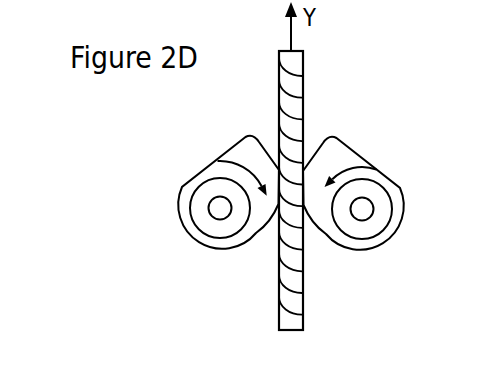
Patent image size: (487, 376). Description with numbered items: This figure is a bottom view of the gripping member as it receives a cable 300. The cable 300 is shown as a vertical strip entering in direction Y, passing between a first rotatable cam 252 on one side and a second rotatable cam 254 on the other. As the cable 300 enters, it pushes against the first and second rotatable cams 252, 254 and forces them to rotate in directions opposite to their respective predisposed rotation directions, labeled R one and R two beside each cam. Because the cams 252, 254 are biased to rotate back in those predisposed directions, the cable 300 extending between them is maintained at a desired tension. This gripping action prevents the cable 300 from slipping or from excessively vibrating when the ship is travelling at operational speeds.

The cable 300 is at (293, 87).
The first rotatable cam 252 is at (180, 225).
The second rotatable cam 254 is at (406, 215).